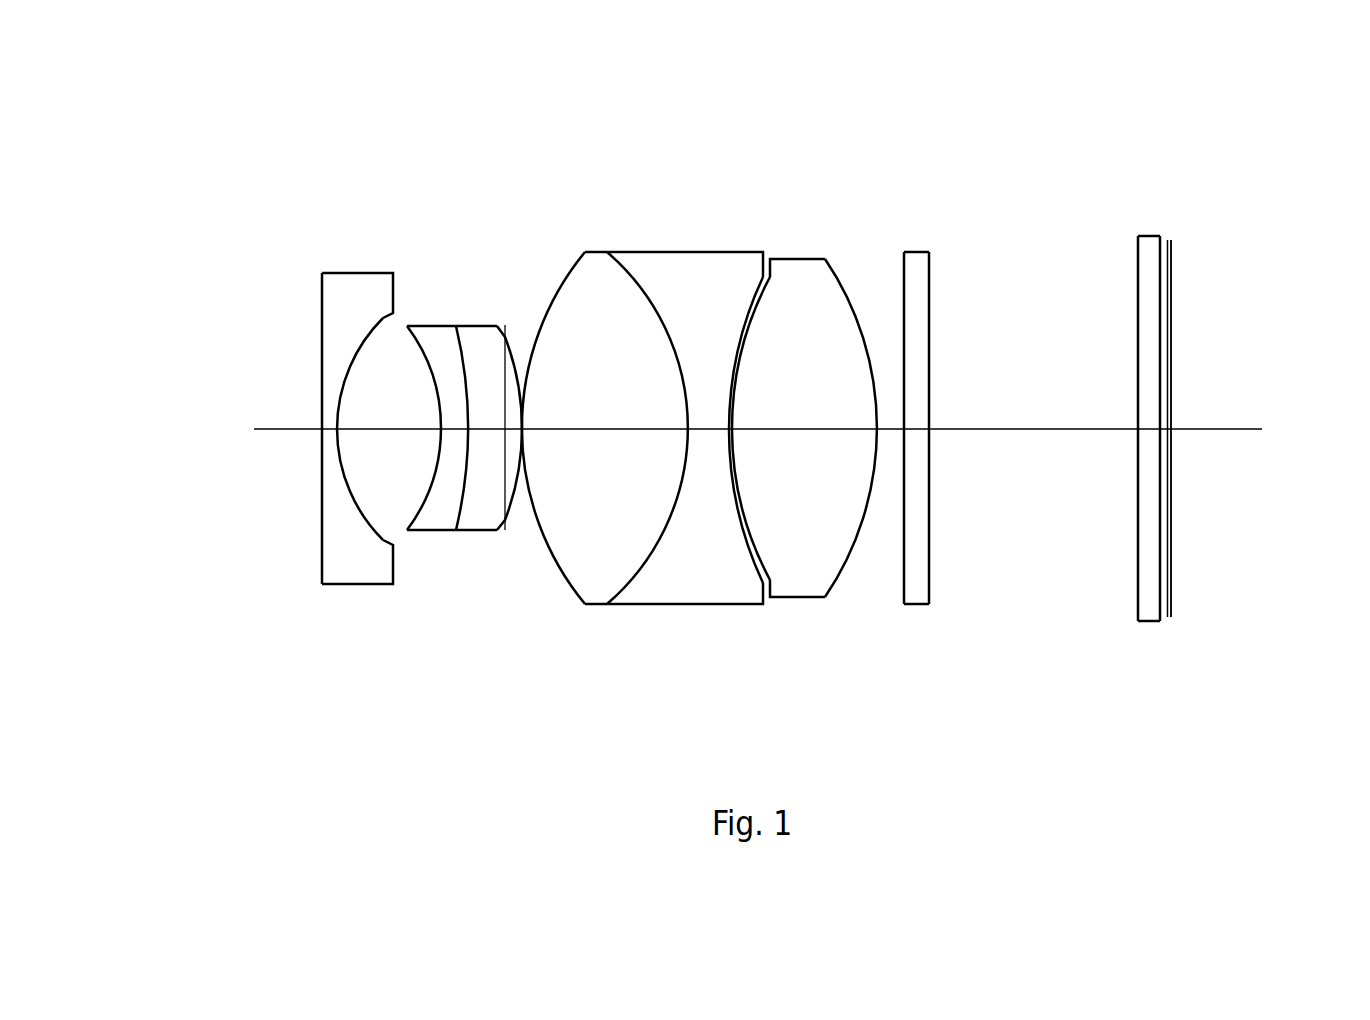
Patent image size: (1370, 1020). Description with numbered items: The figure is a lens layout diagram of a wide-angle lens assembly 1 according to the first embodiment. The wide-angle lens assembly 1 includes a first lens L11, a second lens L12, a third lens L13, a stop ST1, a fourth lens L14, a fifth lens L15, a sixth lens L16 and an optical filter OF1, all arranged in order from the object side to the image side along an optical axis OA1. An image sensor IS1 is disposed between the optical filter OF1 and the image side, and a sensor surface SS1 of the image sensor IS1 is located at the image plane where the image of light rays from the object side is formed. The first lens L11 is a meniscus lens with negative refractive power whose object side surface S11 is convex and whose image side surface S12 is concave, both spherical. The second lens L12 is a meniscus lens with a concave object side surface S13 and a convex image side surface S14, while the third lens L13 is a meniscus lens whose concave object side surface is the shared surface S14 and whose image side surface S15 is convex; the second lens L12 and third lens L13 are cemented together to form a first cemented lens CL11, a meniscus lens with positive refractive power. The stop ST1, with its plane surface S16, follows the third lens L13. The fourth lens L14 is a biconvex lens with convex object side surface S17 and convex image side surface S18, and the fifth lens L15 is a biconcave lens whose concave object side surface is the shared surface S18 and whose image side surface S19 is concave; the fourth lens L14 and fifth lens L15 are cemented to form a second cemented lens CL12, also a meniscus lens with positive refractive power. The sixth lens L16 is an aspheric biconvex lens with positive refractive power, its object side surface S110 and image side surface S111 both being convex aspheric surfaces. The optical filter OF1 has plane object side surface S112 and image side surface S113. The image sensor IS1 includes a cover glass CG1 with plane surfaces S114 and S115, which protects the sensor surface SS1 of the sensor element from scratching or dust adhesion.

The wide-angle lens assembly 1 is at (167, 83).
The optical axis OA1 is at (290, 429).
The first lens L11 is at (318, 435).
The second lens L12 is at (416, 462).
The third lens L13 is at (489, 433).
The fourth lens L14 is at (605, 449).
The fifth lens L15 is at (685, 457).
The sixth lens L16 is at (806, 467).
The first cemented lens CL11 is at (500, 154).
The second cemented lens CL12 is at (710, 154).
The stop ST1 is at (531, 444).
The optical filter OF1 is at (954, 448).
The image sensor IS1 is at (1319, 131).
The cover glass CG1 is at (1136, 446).
The sensor surface SS1 is at (1169, 240).
The object side surface S11 is at (322, 555).
The image side surface S12 is at (366, 520).
The object side surface S13 is at (421, 508).
The image side surface S14 is at (465, 480).
The image side surface S15 is at (497, 532).
The stop surface S16 is at (505, 528).
The object side surface S17 is at (559, 567).
The image side surface S18 is at (660, 540).
The image side surface S19 is at (745, 537).
The object side surface S110 is at (760, 563).
The image side surface S111 is at (856, 540).
The object side surface S112 is at (904, 552).
The image side surface S113 is at (929, 558).
The surface S114 is at (1138, 543).
The surface S115 is at (1160, 582).